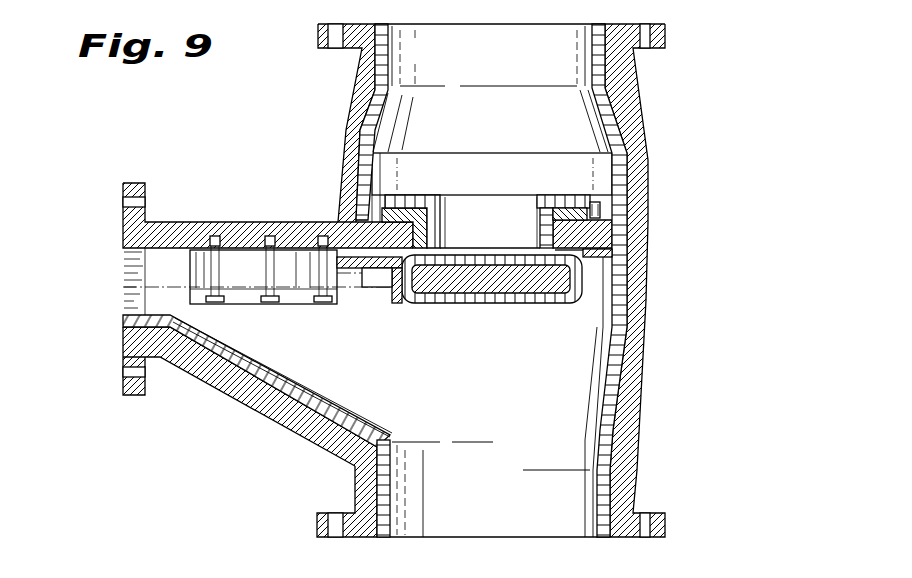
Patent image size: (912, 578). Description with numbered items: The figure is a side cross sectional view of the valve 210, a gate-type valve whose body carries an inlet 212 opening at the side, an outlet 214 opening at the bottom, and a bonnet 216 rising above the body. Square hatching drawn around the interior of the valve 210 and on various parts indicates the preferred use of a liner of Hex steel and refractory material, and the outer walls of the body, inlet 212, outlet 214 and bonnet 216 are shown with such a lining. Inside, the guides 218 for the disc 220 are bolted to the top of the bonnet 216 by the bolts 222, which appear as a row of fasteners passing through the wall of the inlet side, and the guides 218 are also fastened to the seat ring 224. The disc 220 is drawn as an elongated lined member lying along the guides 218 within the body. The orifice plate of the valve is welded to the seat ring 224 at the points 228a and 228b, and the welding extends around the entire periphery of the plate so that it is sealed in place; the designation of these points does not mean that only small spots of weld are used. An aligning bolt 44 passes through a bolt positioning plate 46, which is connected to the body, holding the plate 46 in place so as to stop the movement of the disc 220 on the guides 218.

The valve 210 is at (276, 120).
The inlet 212 is at (637, 103).
The outlet 214 is at (626, 495).
The bonnet 216 is at (172, 222).
The guides 218 is at (190, 268).
The disc 220 is at (618, 280).
The bolts 222 is at (268, 222).
The seat ring 224 is at (408, 208).
The welding point 228a is at (617, 254).
The welding point 228b is at (412, 303).
The aligning bolt 44 is at (343, 162).
The bolt positioning plate 46 is at (355, 130).